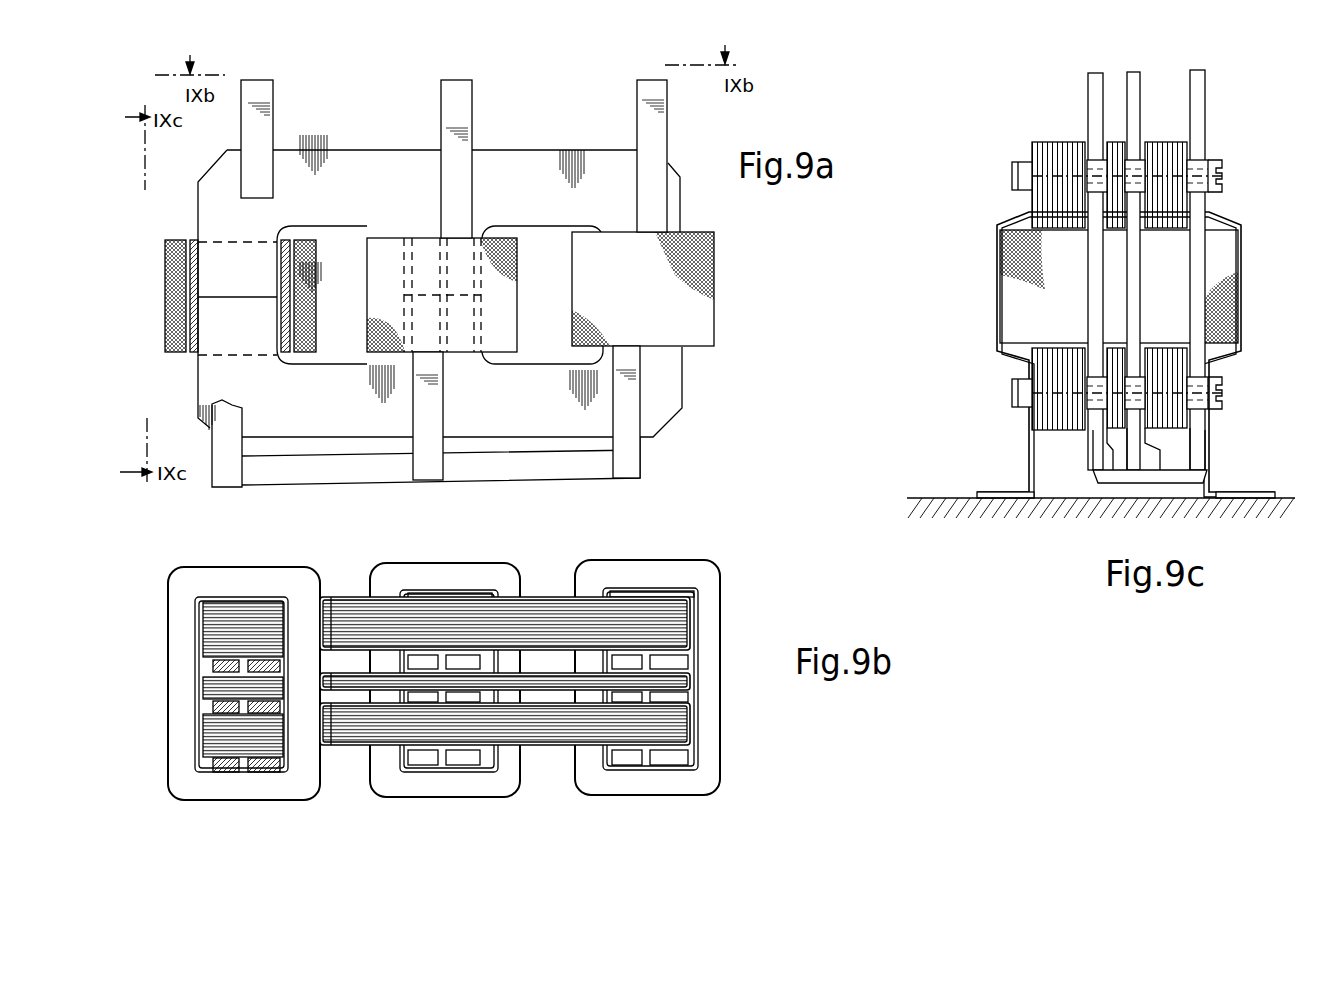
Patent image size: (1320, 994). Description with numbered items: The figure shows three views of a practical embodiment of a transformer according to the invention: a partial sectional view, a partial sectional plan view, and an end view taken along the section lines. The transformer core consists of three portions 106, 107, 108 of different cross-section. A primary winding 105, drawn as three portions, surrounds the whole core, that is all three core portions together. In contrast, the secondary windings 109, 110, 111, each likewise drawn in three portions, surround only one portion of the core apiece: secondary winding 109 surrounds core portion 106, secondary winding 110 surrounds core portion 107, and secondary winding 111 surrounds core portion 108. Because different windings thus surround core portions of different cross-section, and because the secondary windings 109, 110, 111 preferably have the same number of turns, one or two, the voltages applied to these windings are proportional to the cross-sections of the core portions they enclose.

In FIG. 9A, the primary winding 105 is at (172, 242).
In FIG. 9B, the primary winding 105 is at (288, 570).
In FIG. 9C, the primary winding 105 is at (1244, 318).
In FIG. 9B, the core portion 106 is at (683, 613).
In FIG. 9C, the core portion 106 is at (1050, 152).
In FIG. 9B, the core portion 107 is at (690, 678).
In FIG. 9C, the core portion 107 is at (1114, 142).
In FIG. 9B, the core portion 108 is at (680, 725).
In FIG. 9C, the core portion 108 is at (1170, 152).
In FIG. 9B, the secondary winding 109 is at (232, 600).
In FIG. 9B, the secondary winding 110 is at (200, 673).
In FIG. 9B, the secondary winding 111 is at (287, 770).